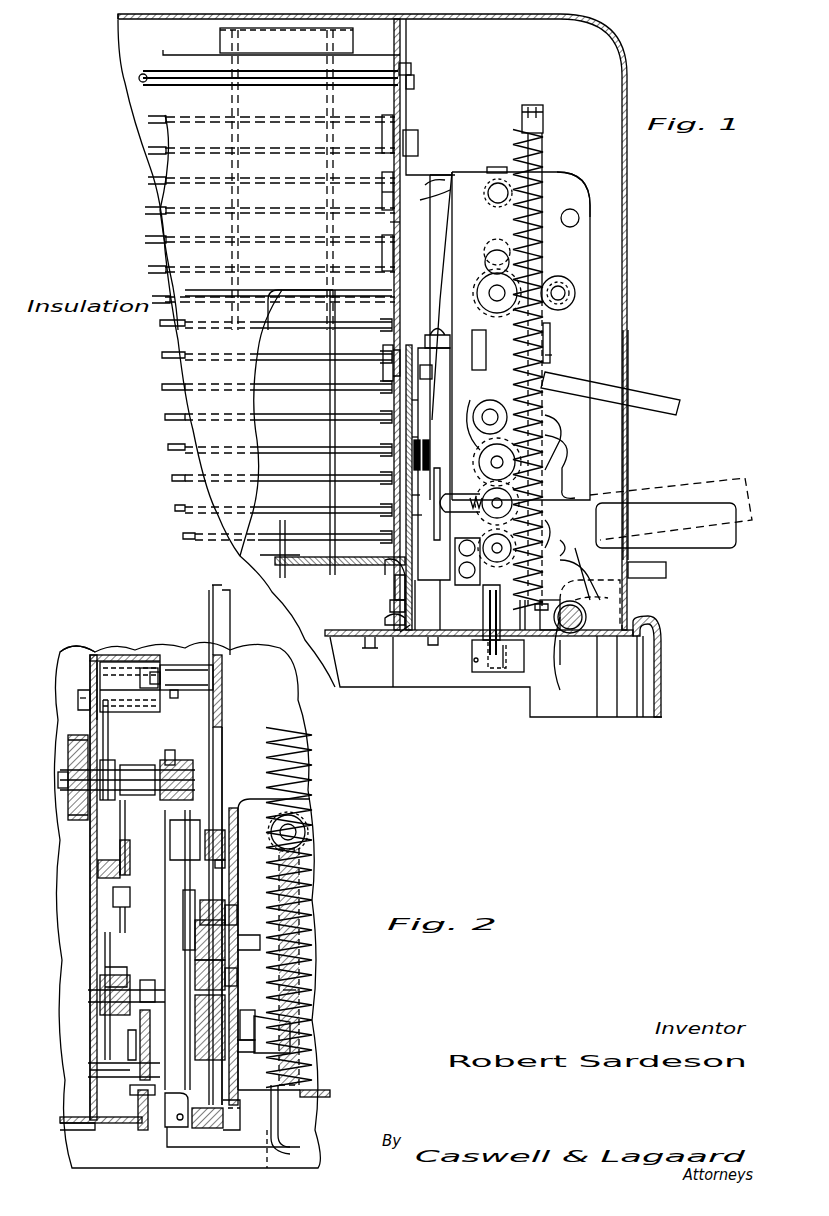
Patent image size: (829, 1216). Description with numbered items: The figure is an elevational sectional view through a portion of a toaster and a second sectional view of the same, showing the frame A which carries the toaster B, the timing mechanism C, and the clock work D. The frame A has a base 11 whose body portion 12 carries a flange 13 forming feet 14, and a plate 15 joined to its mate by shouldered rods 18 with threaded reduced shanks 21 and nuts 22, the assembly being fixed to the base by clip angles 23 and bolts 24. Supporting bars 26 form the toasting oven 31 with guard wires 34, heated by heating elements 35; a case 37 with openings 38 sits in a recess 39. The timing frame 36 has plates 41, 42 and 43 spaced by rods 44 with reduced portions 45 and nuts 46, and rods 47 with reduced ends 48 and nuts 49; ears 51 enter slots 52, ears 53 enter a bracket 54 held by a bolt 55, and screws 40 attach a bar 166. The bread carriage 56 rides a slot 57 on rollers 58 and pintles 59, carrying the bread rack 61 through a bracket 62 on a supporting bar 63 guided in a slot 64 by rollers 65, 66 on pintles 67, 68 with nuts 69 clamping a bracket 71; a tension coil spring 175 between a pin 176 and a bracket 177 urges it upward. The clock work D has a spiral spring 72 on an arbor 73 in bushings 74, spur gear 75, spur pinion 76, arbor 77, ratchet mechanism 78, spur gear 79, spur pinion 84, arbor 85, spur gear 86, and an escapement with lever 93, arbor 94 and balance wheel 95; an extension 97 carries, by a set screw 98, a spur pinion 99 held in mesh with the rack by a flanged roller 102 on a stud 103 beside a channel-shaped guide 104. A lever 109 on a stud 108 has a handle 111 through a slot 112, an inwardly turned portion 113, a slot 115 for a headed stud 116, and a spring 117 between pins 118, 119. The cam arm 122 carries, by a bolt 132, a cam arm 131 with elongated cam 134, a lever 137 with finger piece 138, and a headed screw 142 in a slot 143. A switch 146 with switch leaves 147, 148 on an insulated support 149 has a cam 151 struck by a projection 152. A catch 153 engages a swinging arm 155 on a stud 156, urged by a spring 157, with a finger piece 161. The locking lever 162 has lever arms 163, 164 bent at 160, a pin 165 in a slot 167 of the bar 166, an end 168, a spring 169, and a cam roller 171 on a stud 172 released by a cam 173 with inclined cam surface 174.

In FIG. 1, the base 11 is at (486, 30).
In FIG. 1, the body portion 12 is at (350, 638).
In FIG. 2, the body portion 12 is at (70, 1118).
In FIG. 1, the flange 13 is at (352, 688).
In FIG. 1, the feet 14 is at (634, 705).
In FIG. 1, the plate 15 is at (407, 108).
In FIG. 1, the shouldered rods 18 is at (152, 78).
In FIG. 1, the threaded reduced shanks 21 is at (412, 80).
In FIG. 1, the nuts 22 is at (406, 63).
In FIG. 1, the clip angles 23 is at (393, 680).
In FIG. 1, the bolts 24 is at (370, 650).
In FIG. 1, the supporting bars 26 is at (250, 40).
In FIG. 1, the toasting oven 31 is at (292, 297).
In FIG. 1, the guard wires 34 is at (340, 325).
In FIG. 1, the heating elements 35 is at (175, 345).
In FIG. 1, the frame 36 is at (578, 190).
In FIG. 2, the frame 36 is at (90, 838).
In FIG. 1, the case 37 is at (628, 75).
In FIG. 2, the case 37 is at (92, 820).
In FIG. 1, the openings 38 is at (137, 21).
In FIG. 1, the recess 39 is at (612, 638).
In FIG. 2, the screws 40 is at (170, 1120).
In FIG. 2, the plate 41 is at (90, 655).
In FIG. 2, the plate 42 is at (150, 672).
In FIG. 1, the plate 43 is at (465, 182).
In FIG. 2, the plate 43 is at (218, 655).
In FIG. 1, the rods 44 is at (580, 216).
In FIG. 2, the rods 44 is at (108, 690).
In FIG. 2, the reduced portions 45 is at (80, 700).
In FIG. 2, the nuts 46 is at (80, 695).
In FIG. 1, the rods 47 is at (490, 200).
In FIG. 2, the rods 47 is at (200, 678).
In FIG. 2, the reduced ends 48 is at (140, 665).
In FIG. 2, the nuts 49 is at (158, 675).
In FIG. 1, the ears 51 is at (410, 640).
In FIG. 2, the ears 51 is at (80, 1128).
In FIG. 1, the slots 52 is at (433, 648).
In FIG. 1, the ears 53 is at (490, 168).
In FIG. 1, the bracket 54 is at (436, 178).
In FIG. 2, the bracket 54 is at (125, 655).
In FIG. 1, the bolt 55 is at (418, 140).
In FIG. 1, the bread carriage 56 is at (455, 418).
In FIG. 2, the bread carriage 56 is at (305, 800).
In FIG. 1, the slot 57 is at (490, 248).
In FIG. 2, the slot 57 is at (222, 740).
In FIG. 1, the rollers 58 is at (547, 425).
In FIG. 2, the rollers 58 is at (205, 935).
In FIG. 1, the pintles 59 is at (548, 448).
In FIG. 2, the pintles 59 is at (260, 940).
In FIG. 1, the bread rack 61 is at (282, 565).
In FIG. 1, the bracket 62 is at (345, 567).
In FIG. 1, the supporting bar 63 is at (405, 417).
In FIG. 1, the slot 64 is at (395, 223).
In FIG. 1, the roller 65 is at (390, 355).
In FIG. 1, the roller 66 is at (395, 588).
In FIG. 1, the pintle 67 is at (388, 372).
In FIG. 1, the pintle 68 is at (392, 605).
In FIG. 1, the nuts 69 is at (432, 376).
In FIG. 1, the bracket 71 is at (438, 345).
In FIG. 2, the spiral spring 72 is at (70, 800).
In FIG. 2, the arbor 73 is at (58, 780).
In FIG. 2, the bushings 74 is at (112, 770).
In FIG. 2, the spur gear 75 is at (103, 722).
In FIG. 2, the spur pinion 76 is at (110, 878).
In FIG. 2, the arbor 77 is at (98, 868).
In FIG. 2, the ratchet mechanism 78 is at (115, 897).
In FIG. 2, the spur gear 79 is at (120, 915).
In FIG. 2, the spur pinion 84 is at (146, 980).
In FIG. 2, the arbor 85 is at (90, 996).
In FIG. 2, the spur gear 86 is at (105, 960).
In FIG. 2, the lever 93 is at (132, 1050).
In FIG. 2, the arbor 94 is at (100, 1072).
In FIG. 2, the balance wheel 95 is at (140, 1030).
In FIG. 1, the extension 97 is at (561, 283).
In FIG. 2, the extension 97 is at (190, 778).
In FIG. 2, the set screw 98 is at (185, 762).
In FIG. 1, the spur pinion 99 is at (485, 270).
In FIG. 2, the spur pinion 99 is at (170, 752).
In FIG. 1, the flanged roller 102 is at (575, 290).
In FIG. 2, the flanged roller 102 is at (185, 810).
In FIG. 1, the stud 103 is at (575, 294).
In FIG. 1, the channel-shaped guide 104 is at (552, 335).
In FIG. 2, the channel-shaped guide 104 is at (130, 845).
In FIG. 1, the stud 108 is at (505, 408).
In FIG. 2, the stud 108 is at (225, 905).
In FIG. 1, the lever 109 is at (552, 460).
In FIG. 2, the lever 109 is at (238, 912).
In FIG. 1, the handle 111 is at (698, 508).
In FIG. 1, the slot 112 is at (629, 470).
In FIG. 1, the inwardly turned portion 113 is at (610, 598).
In FIG. 1, the slot 115 is at (550, 478).
In FIG. 2, the slot 115 is at (226, 975).
In FIG. 1, the headed stud 116 is at (520, 507).
In FIG. 1, the spring 117 is at (490, 470).
In FIG. 1, the pin 118 is at (525, 525).
In FIG. 2, the pin 118 is at (238, 978).
In FIG. 1, the pin 119 is at (425, 516).
In FIG. 1, the cam arm 122 is at (420, 285).
In FIG. 1, the cam arm 131 is at (383, 196).
In FIG. 2, the cam arm 131 is at (229, 822).
In FIG. 1, the bolt 132 is at (383, 175).
In FIG. 2, the elongated cam 134 is at (185, 890).
In FIG. 2, the lever 137 is at (225, 840).
In FIG. 1, the finger piece 138 is at (668, 400).
In FIG. 2, the finger piece 138 is at (190, 905).
In FIG. 2, the headed screw 142 is at (190, 832).
In FIG. 2, the slot 143 is at (225, 862).
In FIG. 1, the switch 146 is at (425, 496).
In FIG. 1, the switch leaf 147 is at (414, 473).
In FIG. 1, the switch leaf 148 is at (440, 480).
In FIG. 1, the insulated support 149 is at (408, 437).
In FIG. 1, the cam 151 is at (392, 575).
In FIG. 1, the projection 152 is at (425, 590).
In FIG. 1, the catch 153 is at (553, 635).
In FIG. 1, the swinging arm 155 is at (598, 568).
In FIG. 1, the stud 156 is at (568, 690).
In FIG. 1, the spring 157 is at (586, 617).
In FIG. 2, the bend 160 is at (282, 1130).
In FIG. 1, the finger piece 161 is at (665, 572).
In FIG. 1, the locking lever 162 is at (480, 372).
In FIG. 2, the locking lever 162 is at (299, 1080).
In FIG. 2, the lever arm 163 is at (140, 1112).
In FIG. 2, the lever arm 164 is at (299, 992).
In FIG. 2, the pin 165 is at (180, 1120).
In FIG. 1, the bar 166 is at (465, 650).
In FIG. 2, the bar 166 is at (205, 1130).
In FIG. 2, the slot 167 is at (235, 1132).
In FIG. 2, the end 168 is at (150, 1100).
In FIG. 1, the spring 169 is at (495, 665).
In FIG. 2, the spring 169 is at (267, 1160).
In FIG. 1, the cam roller 171 is at (489, 293).
In FIG. 2, the cam roller 171 is at (308, 826).
In FIG. 2, the stud 172 is at (296, 838).
In FIG. 1, the cam 173 is at (483, 600).
In FIG. 2, the cam 173 is at (290, 1045).
In FIG. 1, the inclined cam surface 174 is at (468, 578).
In FIG. 2, the inclined cam surface 174 is at (256, 1028).
In FIG. 1, the tension coil spring 175 is at (548, 264).
In FIG. 2, the tension coil spring 175 is at (312, 772).
In FIG. 1, the pin 176 is at (540, 630).
In FIG. 2, the pin 176 is at (300, 1094).
In FIG. 1, the bracket 177 is at (543, 108).
In FIG. 2, the bracket 177 is at (230, 592).
In FIG. 1, the frame A is at (394, 96).
In FIG. 1, the toaster B is at (168, 116).
In FIG. 1, the timing mechanism C is at (550, 368).
In FIG. 2, the clock work D is at (70, 745).